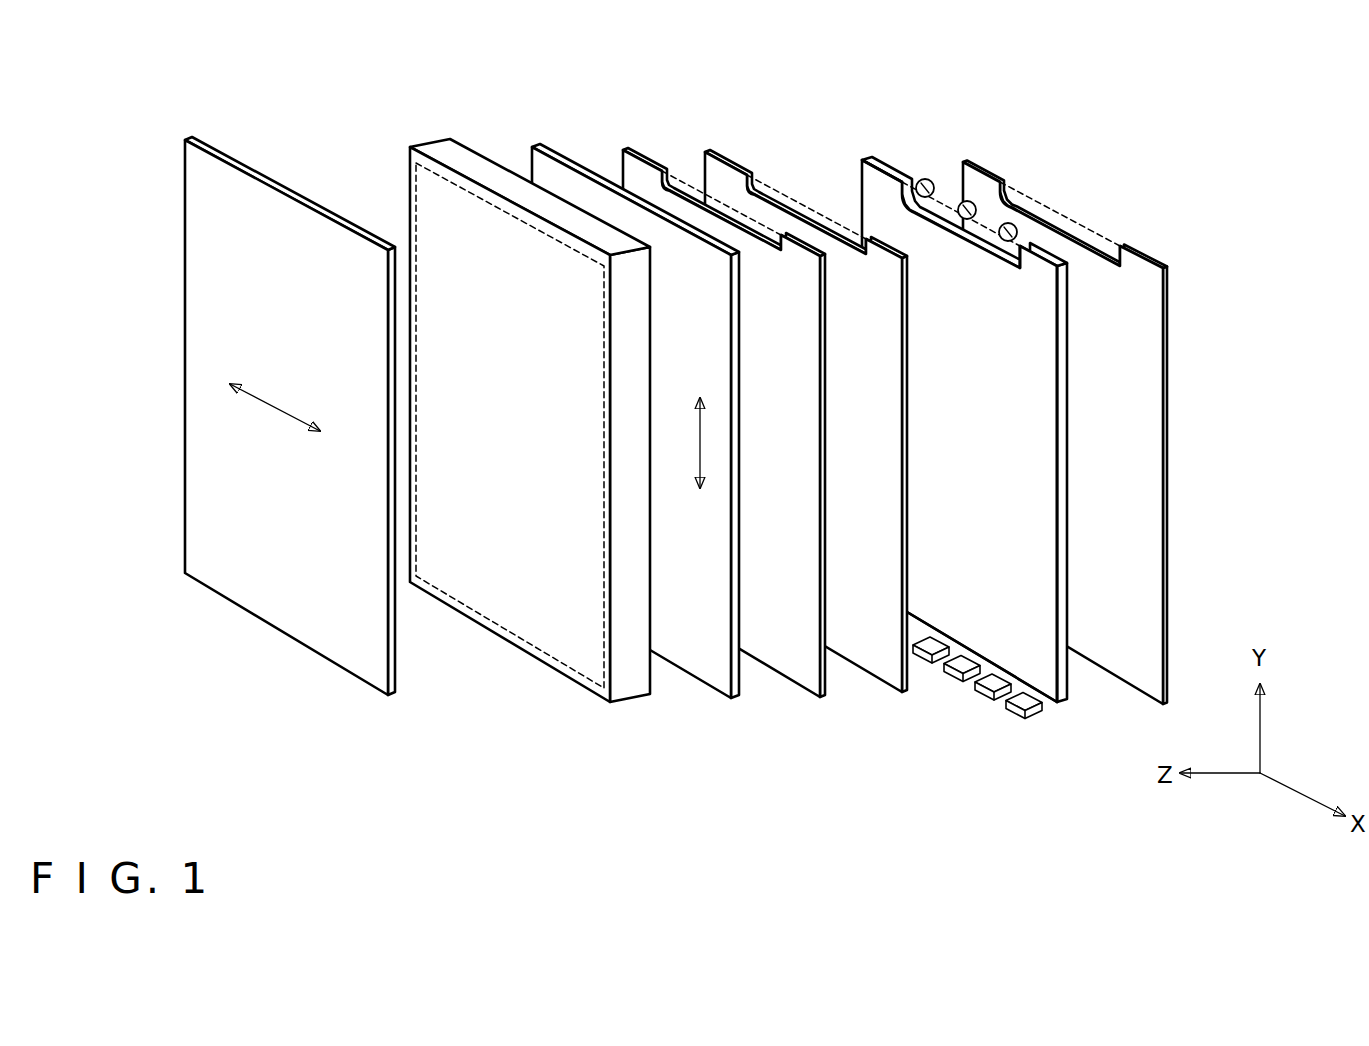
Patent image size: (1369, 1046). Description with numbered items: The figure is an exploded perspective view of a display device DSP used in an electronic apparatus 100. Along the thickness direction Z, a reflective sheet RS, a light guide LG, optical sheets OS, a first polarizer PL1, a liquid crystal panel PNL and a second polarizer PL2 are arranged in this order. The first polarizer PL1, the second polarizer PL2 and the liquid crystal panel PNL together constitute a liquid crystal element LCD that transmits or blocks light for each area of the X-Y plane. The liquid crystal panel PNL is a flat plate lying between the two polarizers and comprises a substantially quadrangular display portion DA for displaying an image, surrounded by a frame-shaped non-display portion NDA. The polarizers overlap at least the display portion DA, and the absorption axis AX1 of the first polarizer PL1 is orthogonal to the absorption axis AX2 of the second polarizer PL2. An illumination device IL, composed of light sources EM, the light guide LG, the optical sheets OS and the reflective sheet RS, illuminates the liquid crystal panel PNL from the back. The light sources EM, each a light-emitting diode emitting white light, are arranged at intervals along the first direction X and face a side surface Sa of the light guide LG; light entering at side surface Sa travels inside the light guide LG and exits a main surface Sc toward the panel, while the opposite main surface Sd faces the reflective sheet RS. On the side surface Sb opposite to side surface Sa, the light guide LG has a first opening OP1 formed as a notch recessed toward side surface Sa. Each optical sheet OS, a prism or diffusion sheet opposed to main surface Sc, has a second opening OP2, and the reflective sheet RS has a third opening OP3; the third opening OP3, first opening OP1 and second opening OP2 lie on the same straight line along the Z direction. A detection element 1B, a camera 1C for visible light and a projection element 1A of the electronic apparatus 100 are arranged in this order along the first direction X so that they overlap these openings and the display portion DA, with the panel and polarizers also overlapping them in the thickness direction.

The electronic apparatus 100 is at (942, 107).
The display device DSP is at (681, 462).
The liquid crystal element LCD is at (464, 482).
The second polarizer PL2 is at (290, 419).
The liquid crystal panel PNL is at (533, 453).
The display portion DA is at (503, 586).
The non-display portion NDA is at (510, 457).
The first polarizer PL1 is at (635, 454).
The absorption axis of the first polarizer AX1 is at (700, 452).
The absorption axis of the second polarizer AX2 is at (270, 406).
The optical sheets OS is at (765, 424).
The second opening OP2 is at (770, 183).
The illumination device IL is at (972, 717).
The light sources EM is at (1035, 716).
The light guide LG is at (1000, 425).
The first opening OP1 is at (912, 175).
The side surface Sa is at (986, 670).
The side surface Sb is at (1052, 249).
The main surface Sc is at (1015, 436).
The main surface Sd is at (1080, 437).
The projection element 1A is at (1015, 225).
The detection element 1B is at (931, 180).
The camera 1C is at (973, 203).
The reflective sheet RS is at (1065, 461).
The third opening OP3 is at (1097, 230).